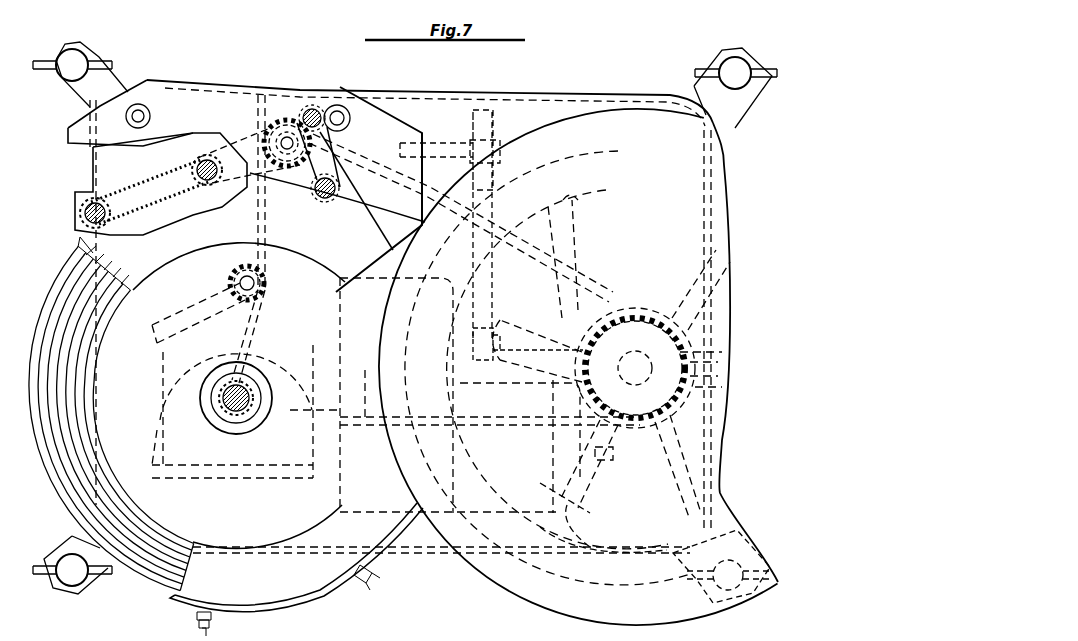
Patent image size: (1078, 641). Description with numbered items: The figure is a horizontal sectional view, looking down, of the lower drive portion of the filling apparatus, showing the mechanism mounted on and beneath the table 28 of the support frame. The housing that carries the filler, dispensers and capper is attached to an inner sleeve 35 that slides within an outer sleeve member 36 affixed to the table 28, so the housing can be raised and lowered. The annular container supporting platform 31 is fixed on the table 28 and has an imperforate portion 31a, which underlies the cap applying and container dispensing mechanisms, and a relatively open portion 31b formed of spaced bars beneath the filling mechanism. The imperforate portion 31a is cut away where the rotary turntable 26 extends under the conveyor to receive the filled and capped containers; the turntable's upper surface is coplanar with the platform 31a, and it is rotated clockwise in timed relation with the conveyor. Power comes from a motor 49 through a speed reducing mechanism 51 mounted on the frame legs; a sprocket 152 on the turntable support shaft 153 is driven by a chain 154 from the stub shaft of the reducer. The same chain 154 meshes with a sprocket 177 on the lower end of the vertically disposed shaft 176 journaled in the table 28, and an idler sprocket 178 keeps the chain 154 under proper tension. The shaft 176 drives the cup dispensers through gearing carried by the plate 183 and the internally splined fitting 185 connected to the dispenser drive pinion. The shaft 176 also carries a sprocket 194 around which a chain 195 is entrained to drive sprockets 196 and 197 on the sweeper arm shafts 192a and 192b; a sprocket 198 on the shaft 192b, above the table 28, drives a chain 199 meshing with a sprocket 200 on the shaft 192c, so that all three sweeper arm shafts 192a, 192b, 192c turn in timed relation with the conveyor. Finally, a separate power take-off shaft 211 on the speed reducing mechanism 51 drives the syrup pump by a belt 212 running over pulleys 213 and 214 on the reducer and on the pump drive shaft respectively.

The rotary turntable 26 is at (733, 153).
The table 28 is at (520, 112).
The container supporting platform 31 is at (44, 285).
The imperforate portion 31a is at (186, 256).
The open portion 31b is at (42, 468).
The inner sleeve 35 is at (240, 415).
The outer sleeve member 36 is at (270, 382).
The motor 49 is at (578, 512).
The speed reducing mechanism 51 is at (165, 395).
The sprocket 152 is at (598, 332).
The turntable support shaft 153 is at (640, 386).
The chain 154 is at (441, 415).
The shaft 176 is at (289, 118).
The sprocket 177 is at (265, 239).
The idler sprocket 178 is at (247, 265).
The plate 183 is at (367, 110).
The internally splined fitting 185 is at (315, 106).
The shaft 192a is at (338, 192).
The shaft 192b is at (204, 163).
The shaft 192c is at (92, 205).
The sprocket 194 is at (258, 110).
The chain 195 is at (238, 135).
The sprocket 196 is at (340, 180).
The sprocket 197 is at (215, 190).
The sprocket 198 is at (190, 183).
The chain 199 is at (135, 182).
The sprocket 200 is at (110, 202).
The power take-off shaft 211 is at (504, 340).
The belt 212 is at (498, 226).
The pulley 213 is at (496, 330).
The pulley 214 is at (496, 130).